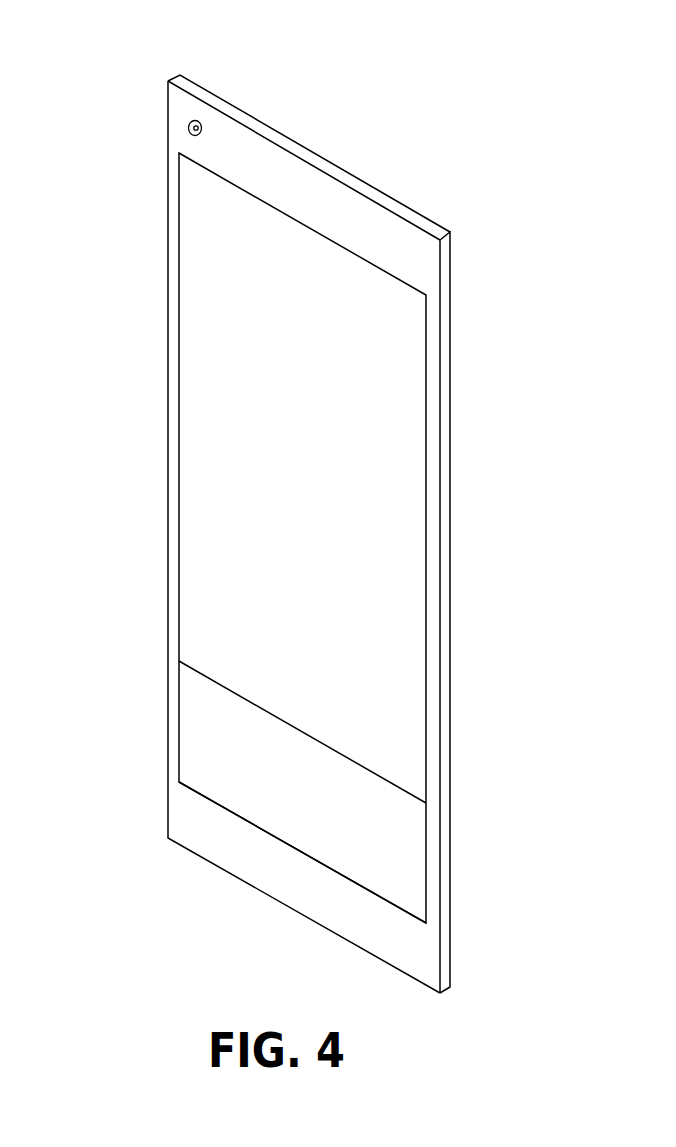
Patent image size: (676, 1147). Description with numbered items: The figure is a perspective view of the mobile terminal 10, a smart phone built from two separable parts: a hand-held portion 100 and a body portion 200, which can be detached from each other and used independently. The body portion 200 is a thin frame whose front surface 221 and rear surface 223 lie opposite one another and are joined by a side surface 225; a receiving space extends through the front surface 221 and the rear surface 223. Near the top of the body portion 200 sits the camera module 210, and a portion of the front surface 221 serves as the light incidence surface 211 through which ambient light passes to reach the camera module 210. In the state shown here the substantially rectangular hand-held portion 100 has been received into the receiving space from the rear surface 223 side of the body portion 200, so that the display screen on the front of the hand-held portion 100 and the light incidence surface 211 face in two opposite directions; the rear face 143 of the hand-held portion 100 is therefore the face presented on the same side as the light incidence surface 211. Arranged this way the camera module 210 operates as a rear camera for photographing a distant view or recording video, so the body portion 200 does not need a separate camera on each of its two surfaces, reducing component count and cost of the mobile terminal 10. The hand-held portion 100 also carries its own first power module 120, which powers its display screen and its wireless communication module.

The mobile terminal 10 is at (139, 93).
The hand-held portion 100 is at (197, 235).
The first power module 120 is at (392, 860).
The rear face 143 is at (208, 447).
The body portion 200 is at (190, 822).
The camera module 210 is at (192, 131).
The light incidence surface 211 is at (193, 131).
The front surface 221 is at (428, 275).
The rear surface 223 is at (410, 210).
The side surface 225 is at (450, 732).